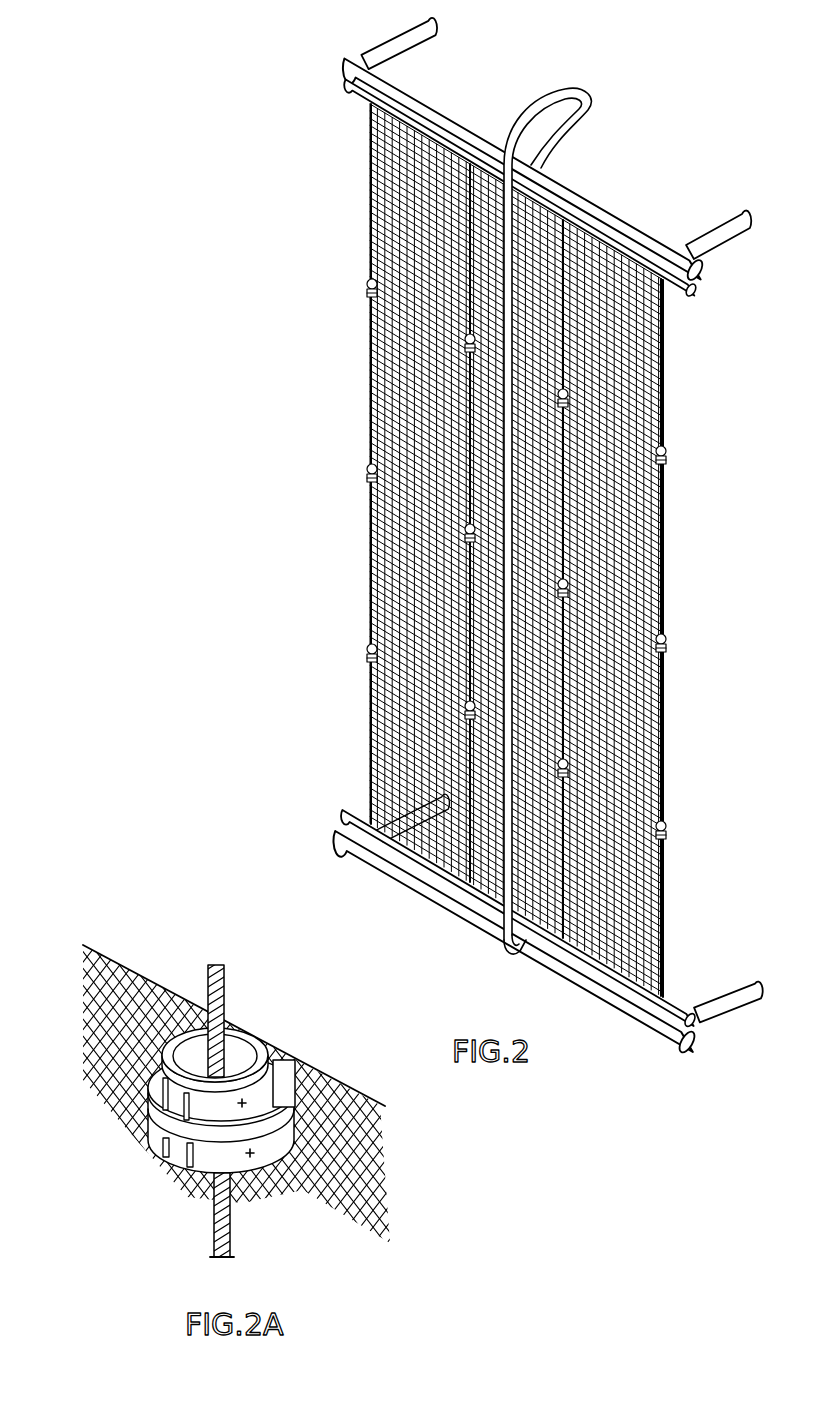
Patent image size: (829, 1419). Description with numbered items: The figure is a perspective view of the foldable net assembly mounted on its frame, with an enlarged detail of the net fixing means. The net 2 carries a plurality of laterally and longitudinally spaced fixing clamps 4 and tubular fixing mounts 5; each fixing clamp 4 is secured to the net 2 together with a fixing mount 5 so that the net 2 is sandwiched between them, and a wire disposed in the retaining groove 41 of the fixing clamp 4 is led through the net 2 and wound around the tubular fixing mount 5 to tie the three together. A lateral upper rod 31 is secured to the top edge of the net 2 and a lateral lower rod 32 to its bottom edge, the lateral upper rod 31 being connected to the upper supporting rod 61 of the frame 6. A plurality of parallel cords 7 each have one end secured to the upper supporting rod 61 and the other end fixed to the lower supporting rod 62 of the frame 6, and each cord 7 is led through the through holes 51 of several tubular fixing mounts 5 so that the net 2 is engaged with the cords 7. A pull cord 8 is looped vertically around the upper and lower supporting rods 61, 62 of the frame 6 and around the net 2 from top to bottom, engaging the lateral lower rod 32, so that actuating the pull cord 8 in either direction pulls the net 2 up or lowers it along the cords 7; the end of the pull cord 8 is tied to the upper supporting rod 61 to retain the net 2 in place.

In FIG. 2, the net 2 is at (665, 542).
In FIG. 2A, the net 2 is at (123, 965).
In FIG. 2A, the fixing clamp 4 is at (280, 1106).
In FIG. 2A, the retaining groove 41 is at (303, 1088).
In FIG. 2A, the tubular fixing mount 5 is at (250, 1038).
In FIG. 2A, the through hole 51 is at (243, 1042).
In FIG. 2, the frame 6 is at (434, 34).
In FIG. 2, the upper supporting rod 61 is at (612, 207).
In FIG. 2, the lower supporting rod 62 is at (695, 1043).
In FIG. 2A, the cord 7 is at (226, 975).
In FIG. 2, the pull cord 8 is at (590, 96).
In FIG. 2, the lateral upper rod 31 is at (700, 288).
In FIG. 2, the lateral lower rod 32 is at (678, 996).